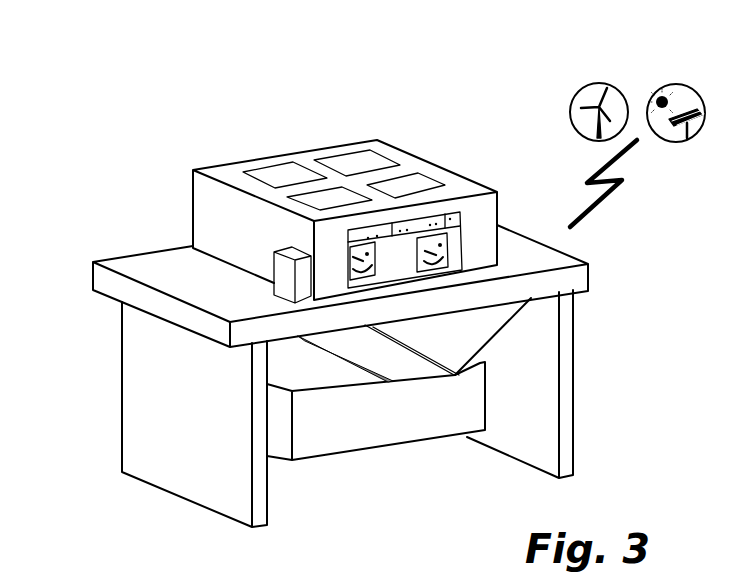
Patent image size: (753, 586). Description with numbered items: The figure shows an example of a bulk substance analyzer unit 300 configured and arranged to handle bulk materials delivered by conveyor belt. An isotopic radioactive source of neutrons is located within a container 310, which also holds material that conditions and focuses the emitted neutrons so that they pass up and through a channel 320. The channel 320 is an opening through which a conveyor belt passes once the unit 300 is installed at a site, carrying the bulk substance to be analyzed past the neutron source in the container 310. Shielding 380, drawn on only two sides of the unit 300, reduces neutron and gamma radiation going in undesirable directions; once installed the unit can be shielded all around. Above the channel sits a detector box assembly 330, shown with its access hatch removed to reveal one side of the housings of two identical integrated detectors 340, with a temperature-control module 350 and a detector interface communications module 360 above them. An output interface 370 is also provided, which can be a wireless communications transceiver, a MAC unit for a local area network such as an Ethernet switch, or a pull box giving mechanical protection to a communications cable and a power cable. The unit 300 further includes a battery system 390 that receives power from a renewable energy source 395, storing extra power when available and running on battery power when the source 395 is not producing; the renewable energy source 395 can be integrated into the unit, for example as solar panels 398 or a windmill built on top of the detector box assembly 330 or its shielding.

The bulk substance analyzer unit 300 is at (97, 128).
The container 310 is at (387, 412).
The channel 320 is at (408, 372).
The detector box assembly 330 is at (352, 189).
The integrated detector 340 is at (348, 250).
The temperature-control module 350 is at (387, 201).
The detector interface communications module 360 is at (370, 230).
The output interface 370 is at (283, 268).
The shielding 380 is at (167, 390).
The battery system 390 is at (460, 213).
The renewable energy source 395 is at (562, 63).
The solar panels 398 is at (334, 203).